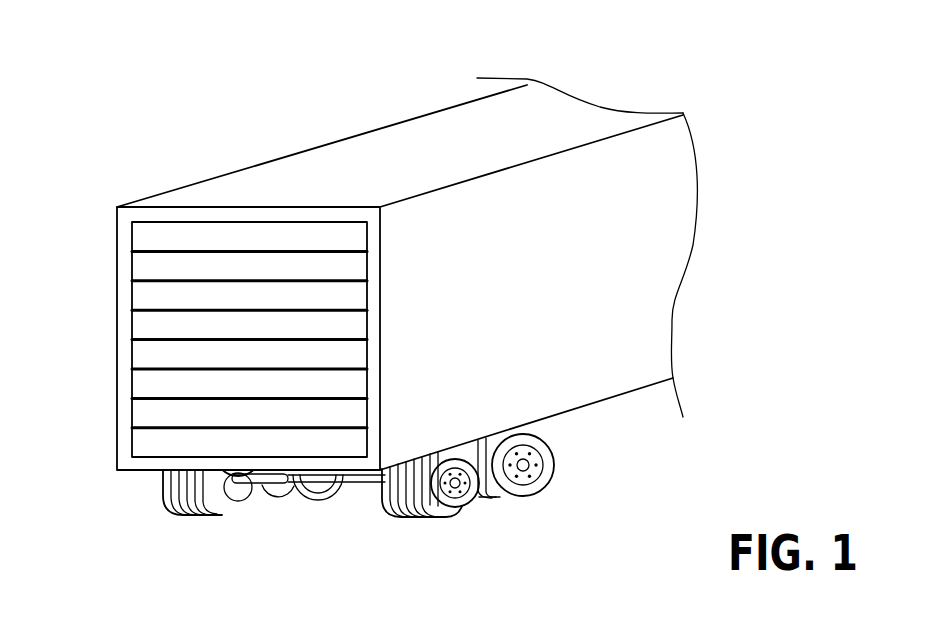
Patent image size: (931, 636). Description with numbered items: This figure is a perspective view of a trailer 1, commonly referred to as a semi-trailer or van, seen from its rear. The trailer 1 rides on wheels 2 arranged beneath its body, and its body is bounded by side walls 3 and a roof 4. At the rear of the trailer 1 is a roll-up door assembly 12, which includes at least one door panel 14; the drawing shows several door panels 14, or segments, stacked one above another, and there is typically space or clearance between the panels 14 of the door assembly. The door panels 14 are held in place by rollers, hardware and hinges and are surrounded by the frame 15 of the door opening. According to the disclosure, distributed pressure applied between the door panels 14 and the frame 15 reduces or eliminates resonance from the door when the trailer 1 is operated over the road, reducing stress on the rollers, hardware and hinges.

The trailer 1 is at (138, 54).
The wheels 2 is at (181, 515).
The side walls 3 is at (557, 393).
The roof 4 is at (320, 168).
The roll-up door assembly 12 is at (131, 332).
The door panel 14 is at (138, 235).
The frame 15 is at (381, 394).